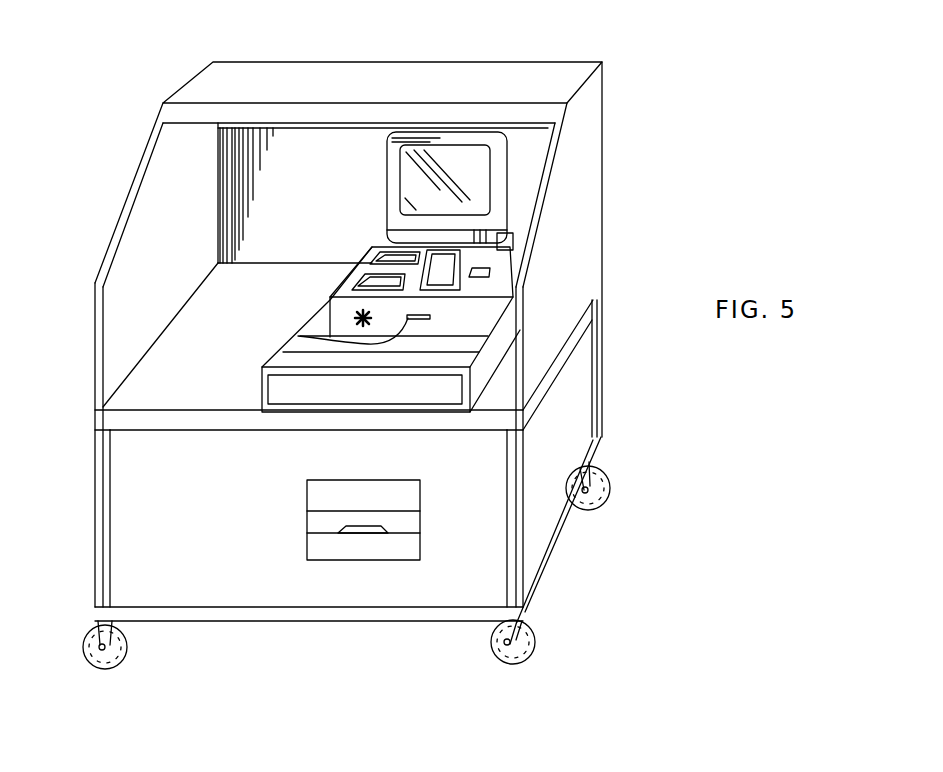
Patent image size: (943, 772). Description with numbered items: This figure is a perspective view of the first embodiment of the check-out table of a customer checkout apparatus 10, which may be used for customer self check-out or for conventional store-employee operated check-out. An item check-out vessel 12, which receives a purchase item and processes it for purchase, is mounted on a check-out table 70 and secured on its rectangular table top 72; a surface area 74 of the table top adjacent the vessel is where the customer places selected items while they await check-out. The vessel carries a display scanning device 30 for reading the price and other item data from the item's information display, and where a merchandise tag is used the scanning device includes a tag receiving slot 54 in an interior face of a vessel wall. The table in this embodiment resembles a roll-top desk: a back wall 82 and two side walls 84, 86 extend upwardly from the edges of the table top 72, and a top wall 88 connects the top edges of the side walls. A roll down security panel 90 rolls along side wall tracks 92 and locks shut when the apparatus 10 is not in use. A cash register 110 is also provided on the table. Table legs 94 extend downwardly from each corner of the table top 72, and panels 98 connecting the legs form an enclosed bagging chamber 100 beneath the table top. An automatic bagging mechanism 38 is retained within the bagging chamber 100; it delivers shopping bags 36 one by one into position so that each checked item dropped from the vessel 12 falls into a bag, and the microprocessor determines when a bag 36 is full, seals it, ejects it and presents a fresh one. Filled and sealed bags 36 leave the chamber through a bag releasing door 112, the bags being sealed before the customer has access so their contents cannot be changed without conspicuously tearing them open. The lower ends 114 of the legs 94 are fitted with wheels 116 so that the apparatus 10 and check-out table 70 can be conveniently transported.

The customer checkout apparatus 10 is at (122, 114).
The item check-out vessel 12 is at (505, 325).
The display scanning device 30 is at (350, 318).
The shopping bag 36 is at (363, 533).
The bagging mechanism 38 is at (340, 531).
The tag receiving slot 54 is at (335, 342).
The check-out table 70 is at (594, 251).
The table top 72 is at (268, 278).
The surface area 74 is at (183, 333).
The back wall 82 is at (314, 172).
The side wall 84 is at (140, 163).
The side wall 86 is at (582, 182).
The top wall 88 is at (390, 80).
The roll down security panel 90 is at (282, 107).
The side wall tracks 92 is at (140, 199).
The table legs 94 is at (95, 528).
The panels 98 is at (626, 378).
The bagging chamber 100 is at (492, 539).
The cash register 110 is at (508, 262).
The bag releasing door 112 is at (355, 487).
The lower ends 114 is at (110, 590).
The wheels 116 is at (128, 647).